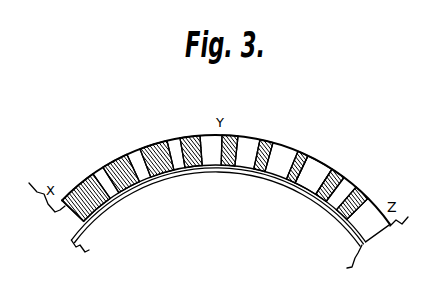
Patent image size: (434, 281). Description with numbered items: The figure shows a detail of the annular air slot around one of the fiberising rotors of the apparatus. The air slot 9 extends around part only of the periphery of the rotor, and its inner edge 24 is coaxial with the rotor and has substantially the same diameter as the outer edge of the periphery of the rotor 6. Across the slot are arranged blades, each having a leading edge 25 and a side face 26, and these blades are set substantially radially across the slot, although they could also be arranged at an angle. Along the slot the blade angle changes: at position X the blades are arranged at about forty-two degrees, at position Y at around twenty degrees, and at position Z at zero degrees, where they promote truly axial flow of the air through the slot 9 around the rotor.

The third fiberising rotor 6 is at (227, 213).
The blade leading edge 25 is at (228, 137).
The blade side face 26 is at (238, 148).
The air slot 9 is at (320, 182).
The inner edge of slot 24 is at (363, 237).